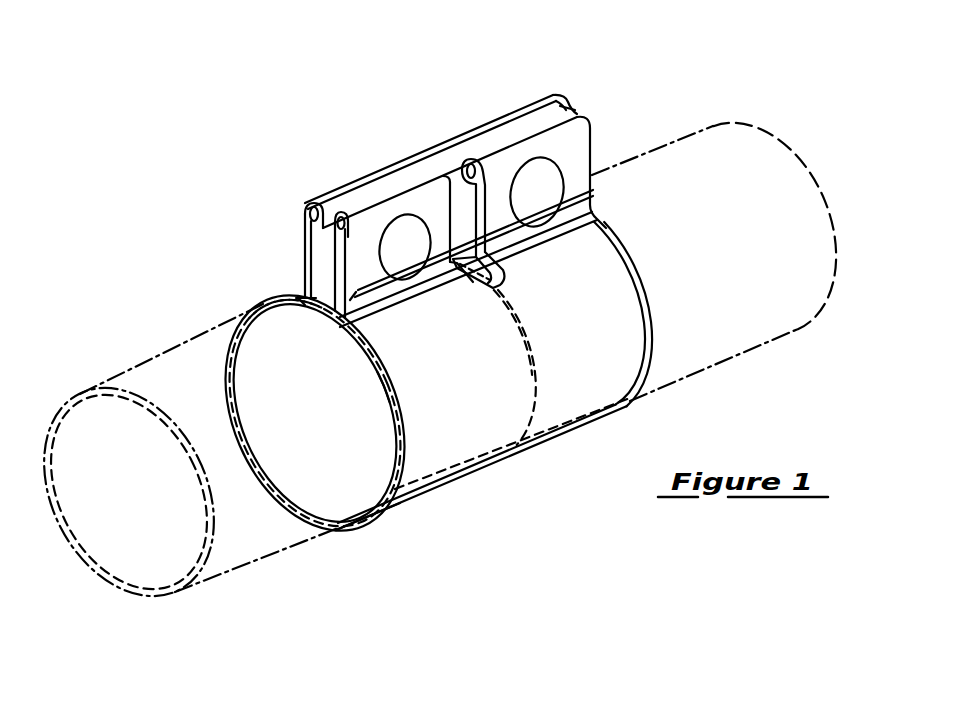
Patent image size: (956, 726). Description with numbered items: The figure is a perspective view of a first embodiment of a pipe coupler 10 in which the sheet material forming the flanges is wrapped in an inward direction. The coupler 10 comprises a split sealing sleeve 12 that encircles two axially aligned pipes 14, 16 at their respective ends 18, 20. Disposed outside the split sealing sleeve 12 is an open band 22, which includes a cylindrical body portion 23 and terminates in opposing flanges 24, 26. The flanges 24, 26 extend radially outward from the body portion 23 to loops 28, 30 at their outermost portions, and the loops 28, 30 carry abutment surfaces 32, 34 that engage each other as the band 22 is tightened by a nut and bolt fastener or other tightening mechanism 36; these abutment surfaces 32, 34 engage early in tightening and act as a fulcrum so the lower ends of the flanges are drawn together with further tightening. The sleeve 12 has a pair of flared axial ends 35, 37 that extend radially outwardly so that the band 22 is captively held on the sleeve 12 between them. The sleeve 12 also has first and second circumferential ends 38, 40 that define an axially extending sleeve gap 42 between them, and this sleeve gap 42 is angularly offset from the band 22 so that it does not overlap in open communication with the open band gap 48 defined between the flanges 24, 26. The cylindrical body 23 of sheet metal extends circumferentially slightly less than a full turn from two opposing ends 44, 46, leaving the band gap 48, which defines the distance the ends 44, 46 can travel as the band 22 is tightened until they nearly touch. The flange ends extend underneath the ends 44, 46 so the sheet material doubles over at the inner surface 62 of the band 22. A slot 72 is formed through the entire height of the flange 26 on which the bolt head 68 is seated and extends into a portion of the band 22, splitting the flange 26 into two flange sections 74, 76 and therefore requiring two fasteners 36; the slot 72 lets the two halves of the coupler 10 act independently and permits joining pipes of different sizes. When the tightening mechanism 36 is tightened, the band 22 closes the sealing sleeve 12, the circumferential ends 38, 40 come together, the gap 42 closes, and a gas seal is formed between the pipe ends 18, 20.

The coupler 10 is at (575, 90).
The split sealing sleeve 12 is at (332, 494).
The pipe 14 is at (152, 378).
The pipe 16 is at (675, 160).
The pipe end 18 is at (508, 392).
The pipe end 20 is at (528, 393).
The open band 22 is at (570, 438).
The cylindrical body portion 23 is at (633, 368).
The flange 24 is at (301, 245).
The flange 26 is at (360, 293).
The loop 28 is at (302, 207).
The loop 30 is at (432, 266).
The abutment surface 32 is at (562, 108).
The abutment surface 34 is at (571, 109).
The flared axial end 35 is at (413, 470).
The tightening mechanism 36 is at (455, 268).
The flared axial end 37 is at (630, 412).
The first circumferential end 38 is at (388, 379).
The second circumferential end 40 is at (392, 392).
The sleeve gap 42 is at (380, 391).
The band end 44 is at (298, 289).
The band end 46 is at (357, 322).
The band gap 48 is at (307, 323).
The inner surface 62 is at (290, 320).
The bolt head 68 is at (407, 240).
The slot 72 is at (510, 165).
The flange section 74 is at (368, 216).
The flange section 76 is at (533, 101).